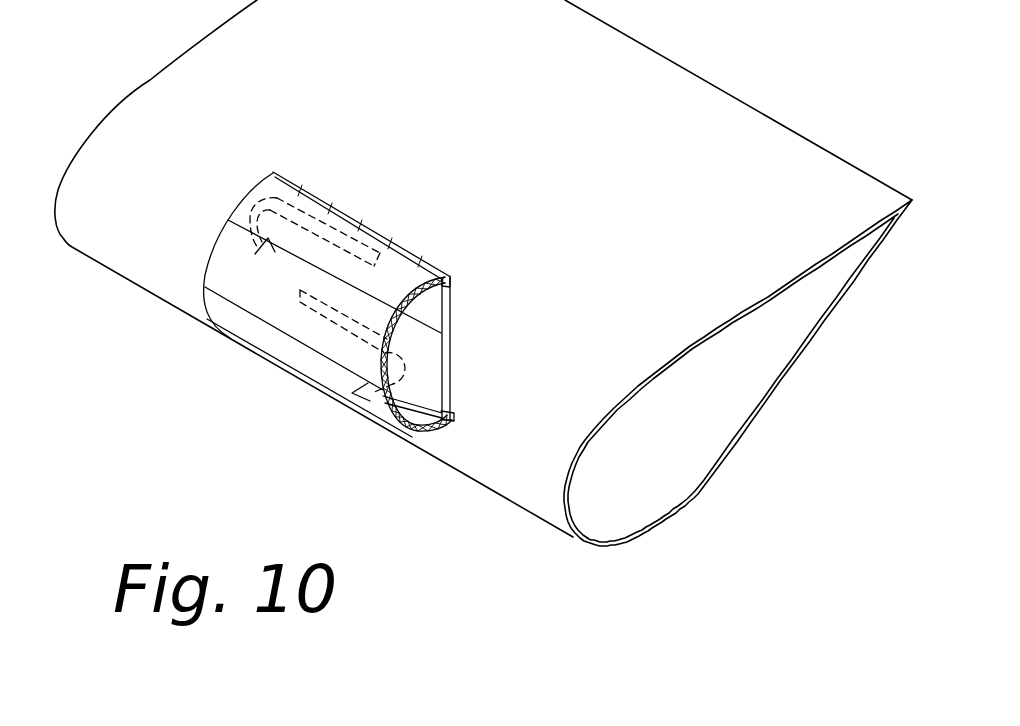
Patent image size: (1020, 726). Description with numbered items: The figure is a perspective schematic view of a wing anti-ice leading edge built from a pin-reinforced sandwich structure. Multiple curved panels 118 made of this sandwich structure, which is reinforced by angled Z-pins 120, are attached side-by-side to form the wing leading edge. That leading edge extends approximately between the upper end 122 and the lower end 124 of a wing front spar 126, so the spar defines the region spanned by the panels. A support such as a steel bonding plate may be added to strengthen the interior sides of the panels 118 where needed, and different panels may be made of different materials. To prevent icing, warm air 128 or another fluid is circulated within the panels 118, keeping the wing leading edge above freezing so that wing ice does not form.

The curved panels 118 is at (225, 270).
The angled Z-pins 120 is at (450, 331).
The upper end of wing front spar 122 is at (450, 281).
The lower end of wing front spar 124 is at (452, 417).
The wing front spar 126 is at (459, 360).
The warm air 128 is at (296, 210).